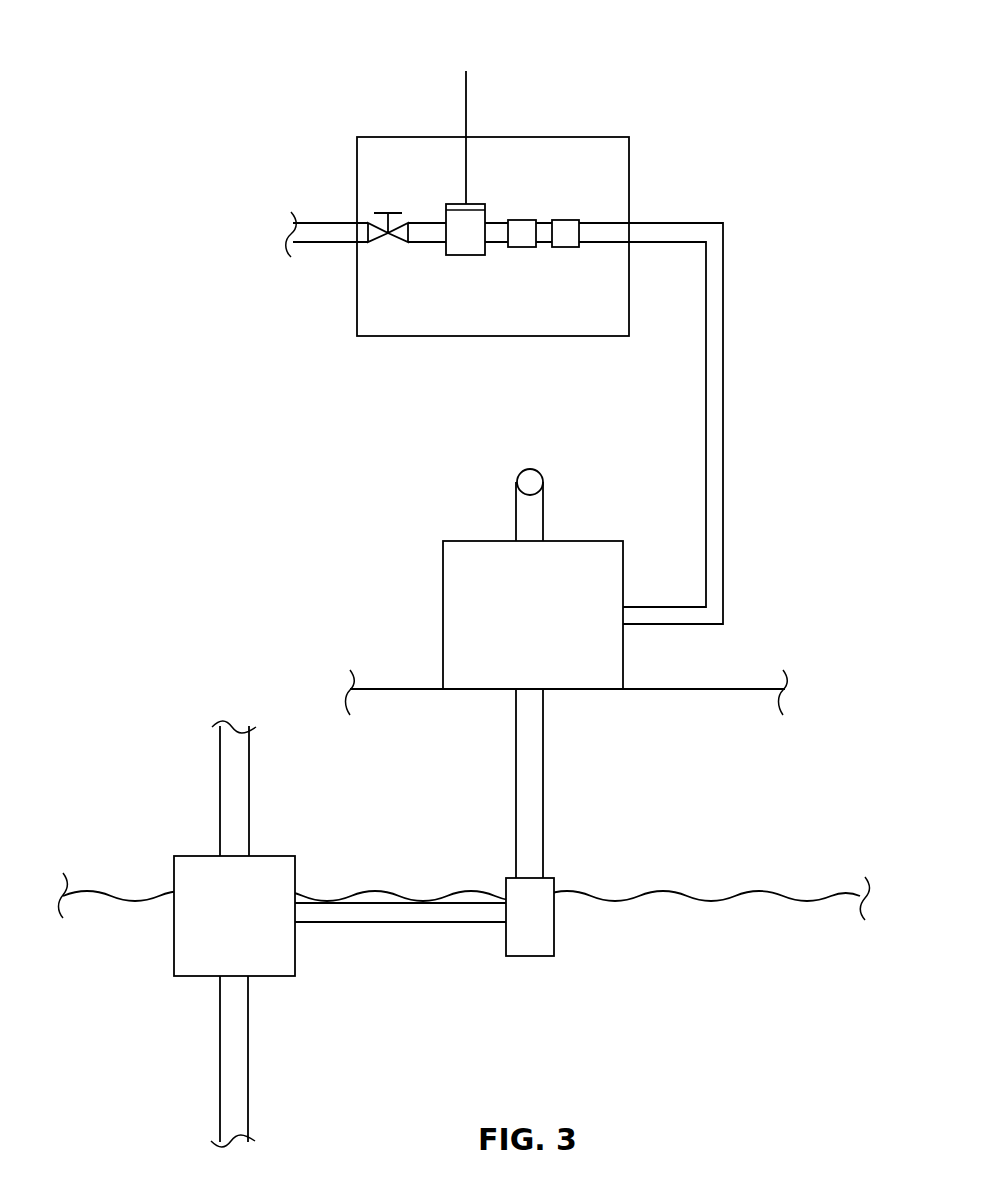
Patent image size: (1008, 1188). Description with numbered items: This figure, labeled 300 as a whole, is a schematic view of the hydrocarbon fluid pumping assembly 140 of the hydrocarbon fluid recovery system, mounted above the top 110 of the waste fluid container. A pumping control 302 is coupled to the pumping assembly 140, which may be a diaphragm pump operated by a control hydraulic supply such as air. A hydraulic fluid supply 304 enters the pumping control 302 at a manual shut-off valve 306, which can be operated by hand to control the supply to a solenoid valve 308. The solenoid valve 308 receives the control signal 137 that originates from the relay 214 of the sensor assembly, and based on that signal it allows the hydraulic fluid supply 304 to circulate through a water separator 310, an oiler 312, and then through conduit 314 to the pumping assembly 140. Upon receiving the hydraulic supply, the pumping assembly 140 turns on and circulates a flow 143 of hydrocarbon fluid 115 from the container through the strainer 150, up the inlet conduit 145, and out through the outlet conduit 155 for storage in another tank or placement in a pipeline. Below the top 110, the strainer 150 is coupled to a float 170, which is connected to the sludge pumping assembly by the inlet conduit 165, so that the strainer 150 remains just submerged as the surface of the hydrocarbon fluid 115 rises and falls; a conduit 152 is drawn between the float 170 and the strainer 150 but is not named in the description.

The gas injection system 300 is at (207, 83).
The relay 214 is at (465, 41).
The control signal 137 is at (466, 107).
The pumping control 302 is at (603, 137).
The hydraulic fluid supply 304 is at (335, 223).
The manual shut-off valve 306 is at (390, 233).
The solenoid valve 308 is at (465, 255).
The water separator 310 is at (520, 247).
The oiler 312 is at (567, 247).
The conduit 314 is at (723, 427).
The hydrocarbon fluid pumping assembly 140 is at (533, 615).
The outlet conduit 155 is at (543, 512).
The top 110 is at (738, 689).
The inlet conduit 145 is at (543, 778).
The hydrocarbon fluid 115 is at (777, 900).
The inlet conduit 165 is at (249, 778).
The float 170 is at (234, 916).
The lateral conduit 152 is at (400, 922).
The strainer 150 is at (554, 917).
The flow 143 is at (537, 964).